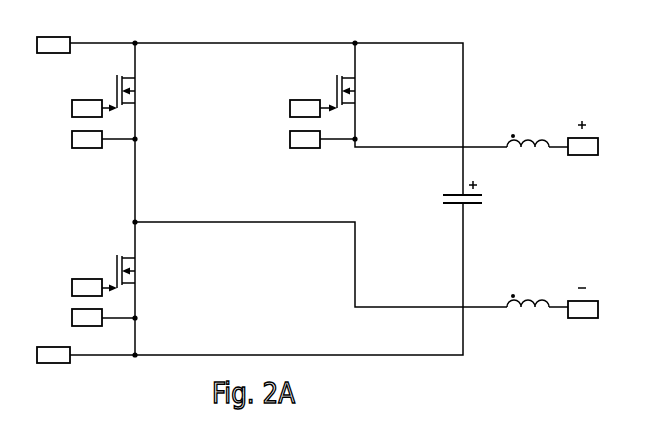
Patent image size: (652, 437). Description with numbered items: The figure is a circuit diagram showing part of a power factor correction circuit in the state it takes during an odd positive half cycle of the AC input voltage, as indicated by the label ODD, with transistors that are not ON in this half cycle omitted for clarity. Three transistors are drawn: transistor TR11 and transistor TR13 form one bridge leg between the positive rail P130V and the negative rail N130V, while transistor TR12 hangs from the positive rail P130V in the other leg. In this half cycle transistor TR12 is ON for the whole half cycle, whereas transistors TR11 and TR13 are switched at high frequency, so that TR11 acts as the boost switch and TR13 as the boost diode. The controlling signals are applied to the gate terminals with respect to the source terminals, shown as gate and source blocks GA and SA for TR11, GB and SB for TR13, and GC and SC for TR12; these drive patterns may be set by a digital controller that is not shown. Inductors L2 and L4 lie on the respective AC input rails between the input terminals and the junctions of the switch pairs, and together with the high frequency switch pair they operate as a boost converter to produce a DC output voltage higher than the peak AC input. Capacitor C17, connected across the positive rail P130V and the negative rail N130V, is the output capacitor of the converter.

The transistor TR11 is at (176, 116).
The transistor TR12 is at (371, 132).
The transistor TR13 is at (176, 294).
The inductor L2 is at (535, 114).
The inductor L4 is at (535, 275).
The capacitor C17 is at (494, 200).
The positive DC output rail P130V is at (52, 30).
The negative DC output rail N130V is at (54, 370).
The odd half cycle indication ODD is at (313, 25).
The gate block GA is at (78, 108).
The source block SA is at (88, 138).
The gate block GC is at (297, 109).
The source block SC is at (308, 138).
The gate block GB is at (78, 287).
The source block SB is at (88, 317).